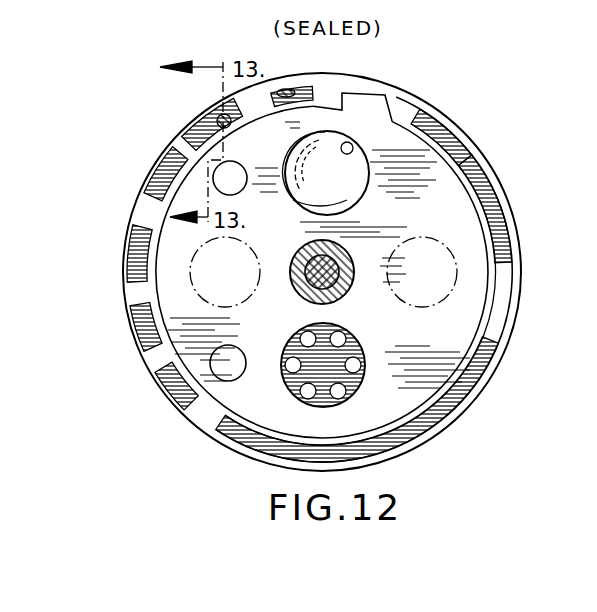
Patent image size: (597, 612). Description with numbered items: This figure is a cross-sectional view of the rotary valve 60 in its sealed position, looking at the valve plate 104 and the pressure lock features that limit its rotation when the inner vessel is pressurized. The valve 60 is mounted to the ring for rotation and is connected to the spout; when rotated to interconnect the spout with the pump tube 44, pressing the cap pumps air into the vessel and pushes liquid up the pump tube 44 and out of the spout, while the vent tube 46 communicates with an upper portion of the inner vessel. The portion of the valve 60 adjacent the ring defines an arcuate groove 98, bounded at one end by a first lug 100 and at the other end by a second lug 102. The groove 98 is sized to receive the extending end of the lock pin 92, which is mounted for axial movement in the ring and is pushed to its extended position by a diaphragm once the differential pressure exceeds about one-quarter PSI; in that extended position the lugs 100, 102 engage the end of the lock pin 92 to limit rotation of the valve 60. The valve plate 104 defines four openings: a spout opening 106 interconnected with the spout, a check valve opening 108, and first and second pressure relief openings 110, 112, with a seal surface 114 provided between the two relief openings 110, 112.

The pump tube 44 is at (445, 258).
The vent tube 46 is at (198, 268).
The rotary valve 60 is at (350, 268).
The lock pin 92 is at (212, 124).
The arcuate groove 98 is at (295, 91).
The first lug 100 is at (335, 98).
The second lug 102 is at (145, 209).
The valve plate 104 is at (222, 384).
The spout opening 106 is at (355, 150).
The check valve opening 108 is at (355, 384).
The first pressure relief opening 110 is at (228, 362).
The second pressure relief opening 112 is at (233, 174).
The seal surface 114 is at (437, 288).